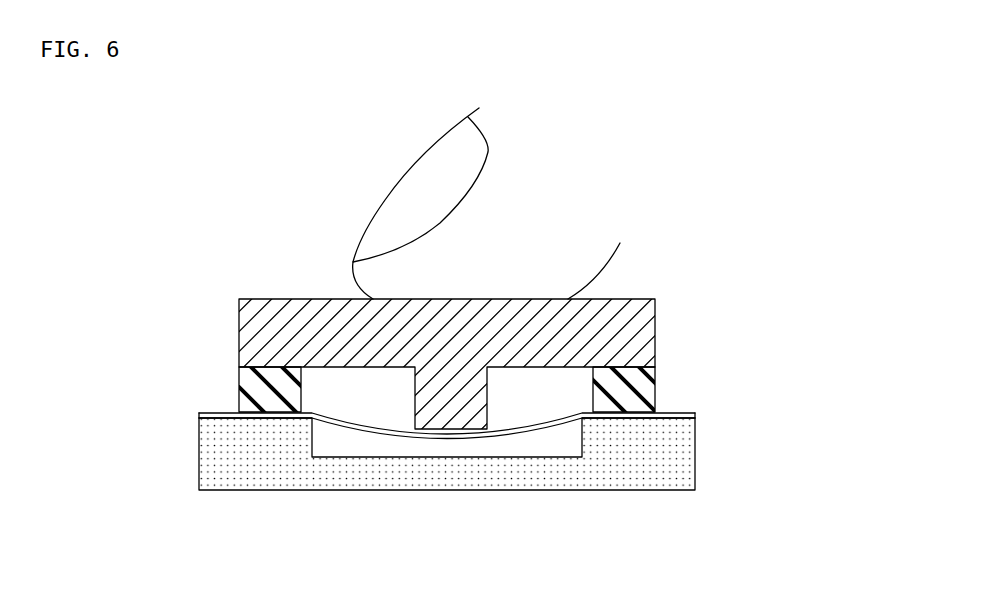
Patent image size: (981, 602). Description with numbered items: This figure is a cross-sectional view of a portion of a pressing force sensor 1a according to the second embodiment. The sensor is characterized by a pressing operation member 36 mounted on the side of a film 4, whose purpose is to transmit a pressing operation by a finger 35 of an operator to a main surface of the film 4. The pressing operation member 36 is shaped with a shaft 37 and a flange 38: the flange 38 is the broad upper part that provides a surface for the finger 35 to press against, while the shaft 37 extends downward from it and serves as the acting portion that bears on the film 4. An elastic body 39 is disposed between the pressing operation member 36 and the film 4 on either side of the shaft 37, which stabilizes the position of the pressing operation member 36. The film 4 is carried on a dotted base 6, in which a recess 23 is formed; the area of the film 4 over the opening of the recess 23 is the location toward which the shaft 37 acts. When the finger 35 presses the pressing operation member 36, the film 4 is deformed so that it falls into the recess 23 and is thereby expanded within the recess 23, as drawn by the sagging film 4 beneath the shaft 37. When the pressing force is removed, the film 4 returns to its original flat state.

The pressing force sensor 1a is at (167, 191).
The finger 35 is at (437, 138).
The pressing operation member 36 is at (655, 322).
The shaft 37 is at (482, 398).
The flange 38 is at (640, 313).
The elastic body 39 is at (239, 385).
The film 4 is at (693, 413).
The base 6 is at (695, 457).
The recess 23 is at (565, 448).